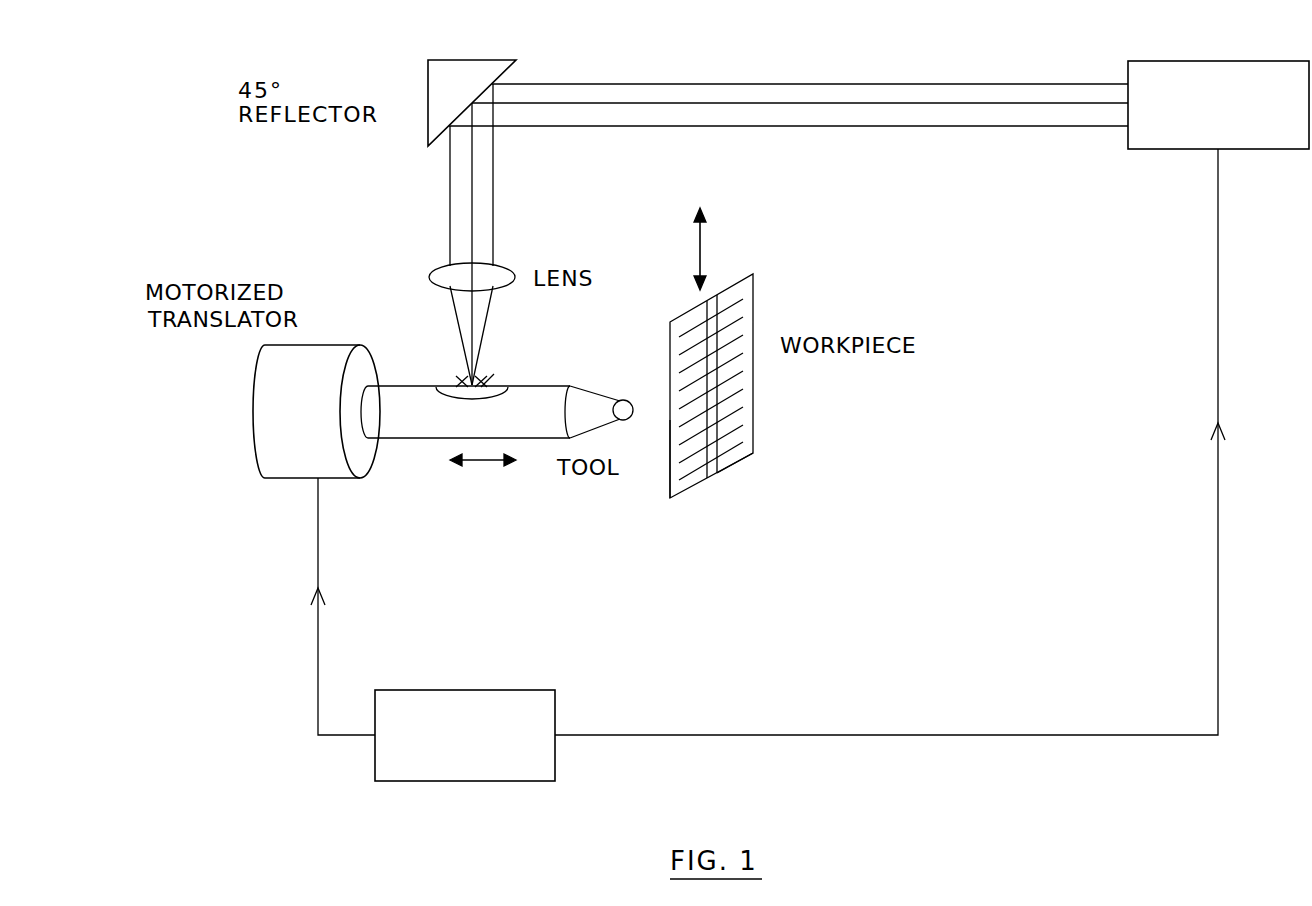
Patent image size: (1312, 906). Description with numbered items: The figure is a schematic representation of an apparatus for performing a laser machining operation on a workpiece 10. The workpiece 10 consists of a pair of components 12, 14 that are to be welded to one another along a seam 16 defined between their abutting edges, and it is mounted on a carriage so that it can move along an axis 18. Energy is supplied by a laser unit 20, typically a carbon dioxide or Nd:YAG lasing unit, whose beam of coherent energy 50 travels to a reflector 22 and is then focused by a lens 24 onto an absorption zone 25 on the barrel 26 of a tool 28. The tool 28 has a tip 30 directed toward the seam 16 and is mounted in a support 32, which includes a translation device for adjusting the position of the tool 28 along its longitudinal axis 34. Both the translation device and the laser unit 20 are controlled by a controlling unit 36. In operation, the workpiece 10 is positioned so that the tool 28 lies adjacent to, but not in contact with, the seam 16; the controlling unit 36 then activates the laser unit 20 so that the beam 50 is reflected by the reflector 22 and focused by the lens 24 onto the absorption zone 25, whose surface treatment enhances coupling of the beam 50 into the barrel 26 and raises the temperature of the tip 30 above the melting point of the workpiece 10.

The workpiece 10 is at (736, 412).
The component 12 is at (680, 492).
The component 14 is at (737, 460).
The seam 16 is at (710, 476).
The axis 18 is at (702, 243).
The laser unit 20 is at (1178, 62).
The reflector 22 is at (458, 72).
The lens 24 is at (500, 290).
The absorption zone 25 is at (451, 392).
The barrel 26 is at (538, 392).
The tool 28 is at (537, 443).
The tip 30 is at (605, 418).
The support 32 is at (316, 411).
The longitudinal axis 34 is at (470, 463).
The controlling unit 36 is at (500, 690).
The beam of coherent energy 50 is at (746, 84).